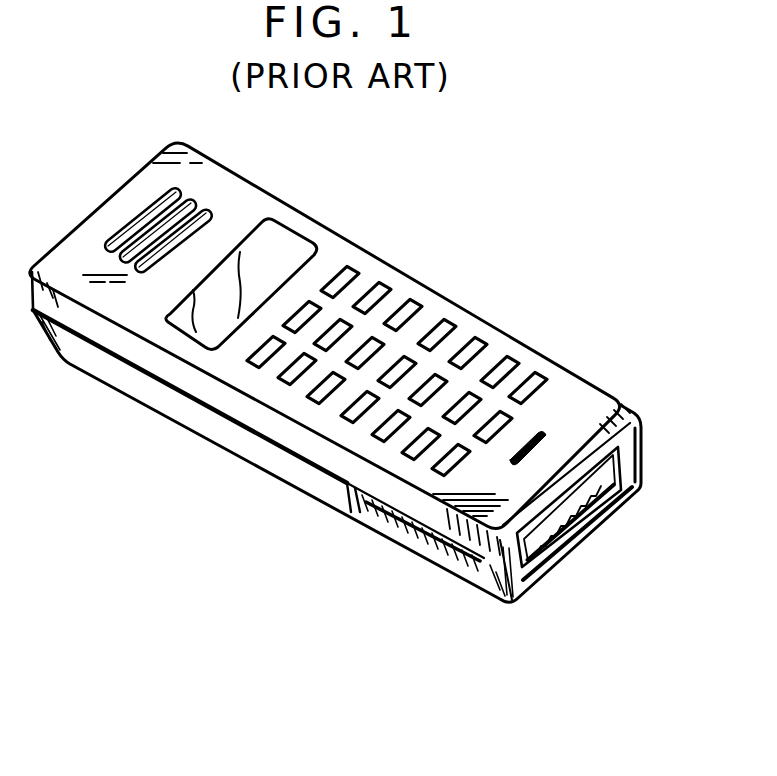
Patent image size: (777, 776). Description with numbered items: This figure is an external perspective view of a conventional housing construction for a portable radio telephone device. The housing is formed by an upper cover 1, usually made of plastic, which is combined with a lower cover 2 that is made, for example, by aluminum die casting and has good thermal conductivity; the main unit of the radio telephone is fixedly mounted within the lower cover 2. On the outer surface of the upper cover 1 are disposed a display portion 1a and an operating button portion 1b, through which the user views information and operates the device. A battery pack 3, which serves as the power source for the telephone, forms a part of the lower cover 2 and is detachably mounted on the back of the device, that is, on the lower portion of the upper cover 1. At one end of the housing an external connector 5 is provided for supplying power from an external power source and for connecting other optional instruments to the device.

The upper cover 1 is at (341, 252).
The display portion 1a is at (273, 226).
The operating button portion 1b is at (380, 296).
The lower cover 2 is at (133, 388).
The battery pack 3 is at (410, 543).
The external connector 5 is at (610, 512).